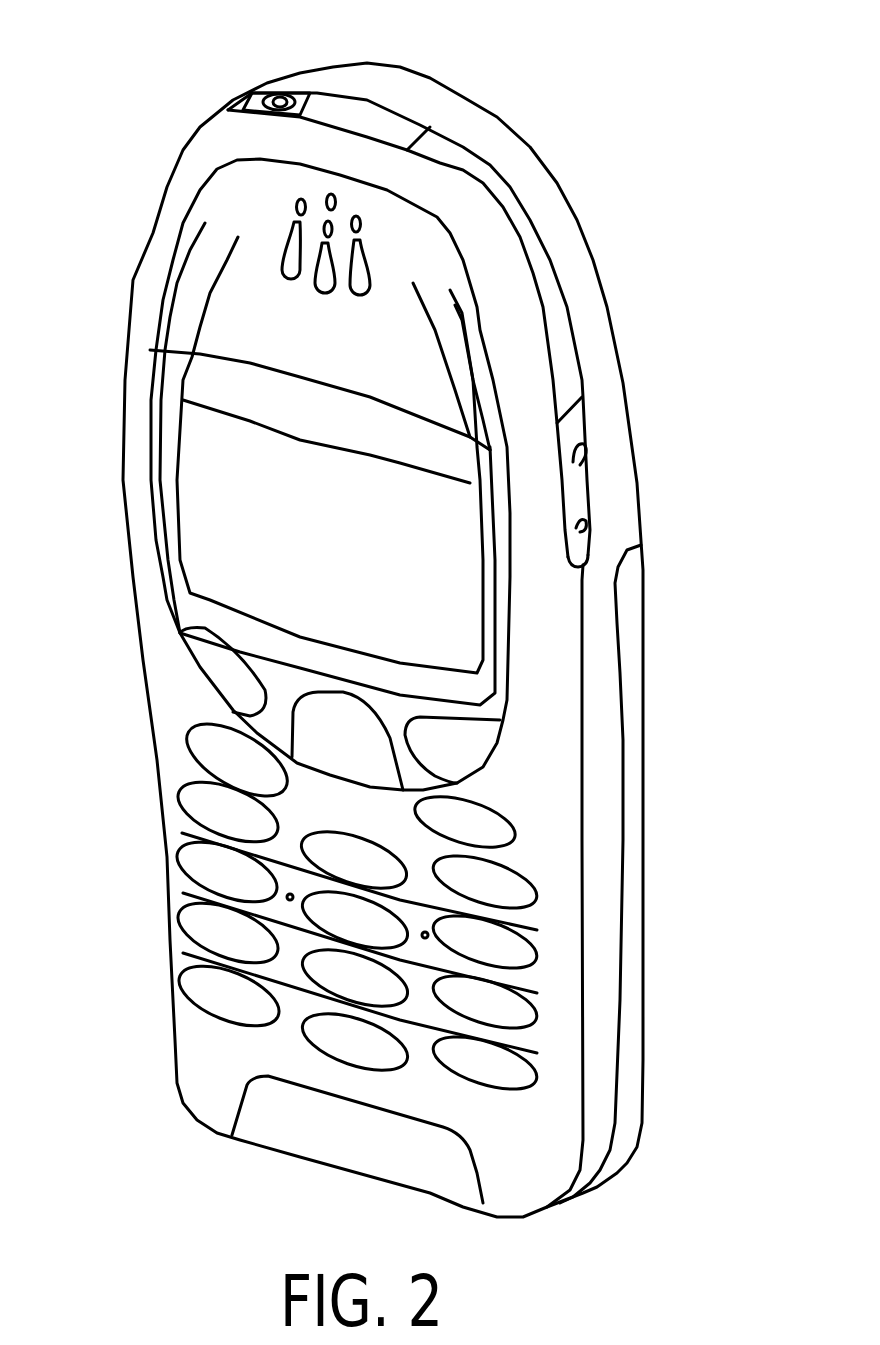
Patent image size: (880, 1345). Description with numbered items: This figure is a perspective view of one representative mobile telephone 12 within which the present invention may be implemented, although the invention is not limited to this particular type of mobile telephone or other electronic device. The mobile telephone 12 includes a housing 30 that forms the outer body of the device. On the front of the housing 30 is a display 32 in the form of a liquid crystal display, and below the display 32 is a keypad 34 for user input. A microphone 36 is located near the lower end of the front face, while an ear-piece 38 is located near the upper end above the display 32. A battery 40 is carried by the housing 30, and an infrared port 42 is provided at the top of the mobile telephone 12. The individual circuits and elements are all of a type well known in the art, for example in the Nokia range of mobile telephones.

The mobile telephone 12 is at (550, 82).
The housing 30 is at (593, 300).
The display 32 is at (447, 597).
The keypad 34 is at (398, 963).
The microphone 36 is at (270, 1128).
The ear-piece 38 is at (217, 228).
The battery 40 is at (632, 1045).
The infrared port 42 is at (329, 75).